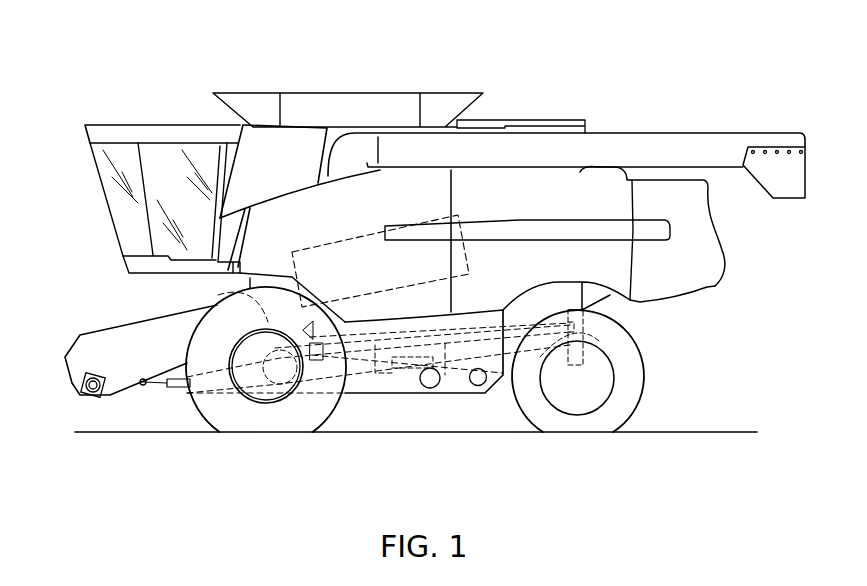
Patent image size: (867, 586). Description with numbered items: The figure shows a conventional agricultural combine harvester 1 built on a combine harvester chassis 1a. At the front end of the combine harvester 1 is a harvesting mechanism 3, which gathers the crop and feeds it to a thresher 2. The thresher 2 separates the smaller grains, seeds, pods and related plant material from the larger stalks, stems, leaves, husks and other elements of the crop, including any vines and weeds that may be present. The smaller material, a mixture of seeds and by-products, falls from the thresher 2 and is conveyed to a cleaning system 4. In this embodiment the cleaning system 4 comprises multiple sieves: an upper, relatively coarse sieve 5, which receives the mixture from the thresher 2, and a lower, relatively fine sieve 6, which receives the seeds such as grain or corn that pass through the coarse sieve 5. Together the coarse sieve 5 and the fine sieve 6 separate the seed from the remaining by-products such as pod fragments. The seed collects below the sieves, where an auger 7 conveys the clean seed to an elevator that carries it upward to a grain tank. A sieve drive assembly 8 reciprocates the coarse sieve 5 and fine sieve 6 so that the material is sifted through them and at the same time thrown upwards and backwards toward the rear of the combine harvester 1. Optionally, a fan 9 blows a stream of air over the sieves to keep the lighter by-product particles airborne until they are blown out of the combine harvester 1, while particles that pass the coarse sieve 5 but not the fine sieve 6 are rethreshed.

The combine harvester 1 is at (728, 74).
The combine harvester chassis 1a is at (489, 410).
The thresher 2 is at (296, 236).
The harvesting mechanism 3 is at (67, 314).
The cleaning system 4 is at (524, 308).
The coarse sieve 5 is at (467, 330).
The fine sieve 6 is at (377, 373).
The auger 7 is at (435, 390).
The sieve drive assembly 8 is at (402, 367).
The fan 9 is at (279, 373).